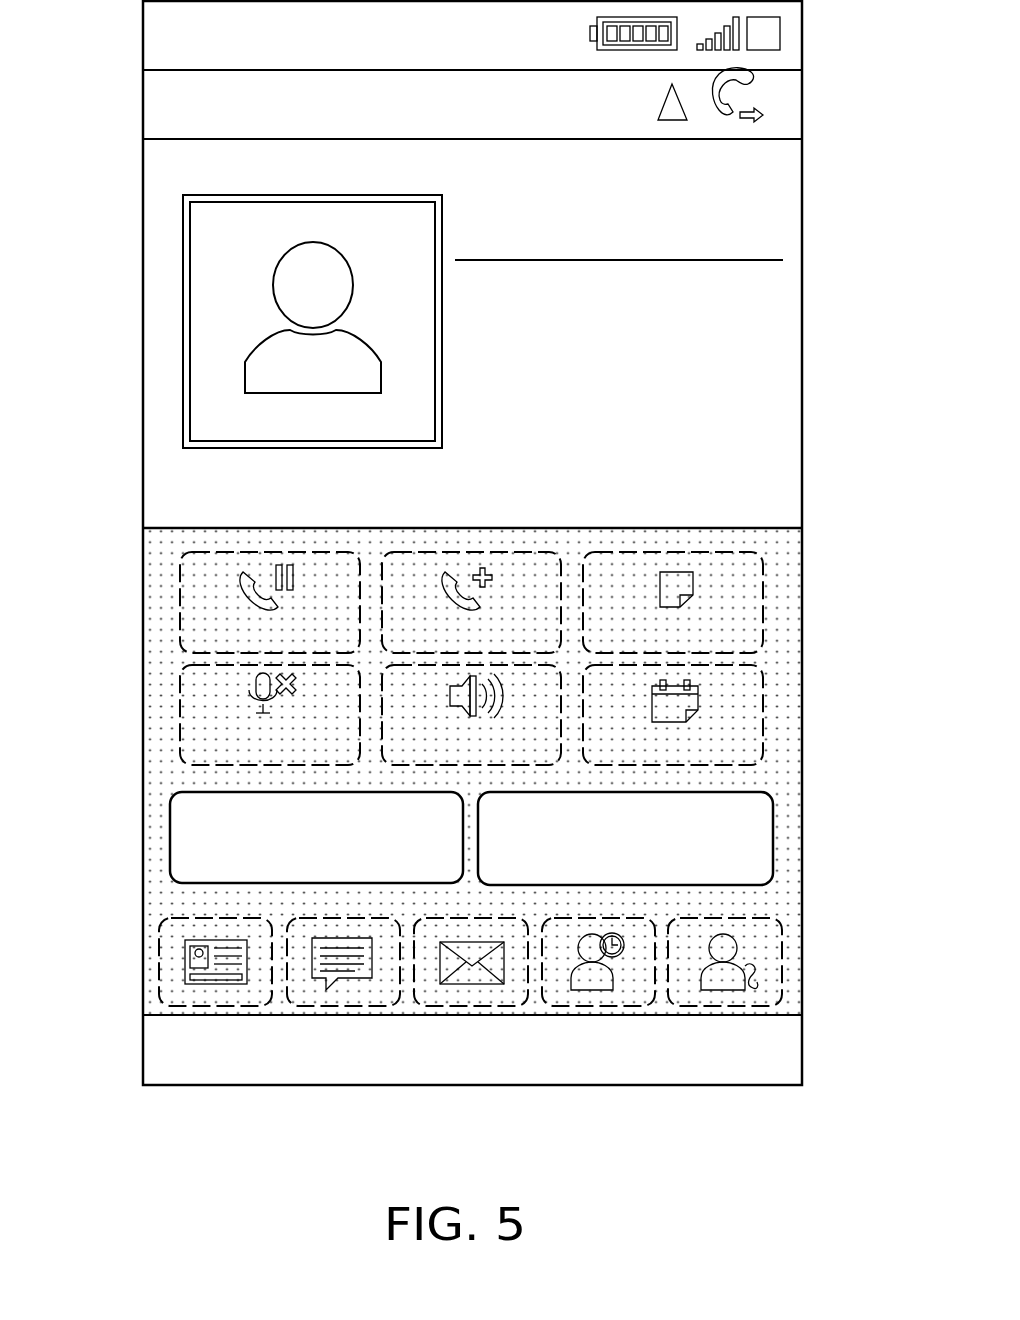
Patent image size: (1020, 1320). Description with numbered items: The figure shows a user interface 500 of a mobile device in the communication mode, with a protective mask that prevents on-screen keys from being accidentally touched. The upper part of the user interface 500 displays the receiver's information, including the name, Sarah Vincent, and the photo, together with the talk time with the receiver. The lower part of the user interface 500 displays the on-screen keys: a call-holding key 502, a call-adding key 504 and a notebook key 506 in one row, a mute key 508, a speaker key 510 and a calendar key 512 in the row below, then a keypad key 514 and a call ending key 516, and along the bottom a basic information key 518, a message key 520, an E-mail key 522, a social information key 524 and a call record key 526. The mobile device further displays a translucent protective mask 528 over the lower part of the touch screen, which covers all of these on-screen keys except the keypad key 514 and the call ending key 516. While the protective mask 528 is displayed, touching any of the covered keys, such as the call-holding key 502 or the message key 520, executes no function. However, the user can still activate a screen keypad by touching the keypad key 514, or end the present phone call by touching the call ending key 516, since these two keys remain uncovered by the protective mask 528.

The user interface 500 is at (143, 306).
The call-holding key 502 is at (180, 616).
The call-adding key 504 is at (513, 552).
The notebook key 506 is at (763, 616).
The mute key 508 is at (180, 727).
The speaker key 510 is at (510, 765).
The calendar key 512 is at (763, 723).
The keypad key 514 is at (170, 838).
The call ending key 516 is at (773, 838).
The basic information key 518 is at (159, 962).
The message key 520 is at (345, 1006).
The E-mail key 522 is at (448, 1008).
The social information key 524 is at (598, 1008).
The call record key 526 is at (782, 962).
The translucent protective mask 528 is at (778, 542).